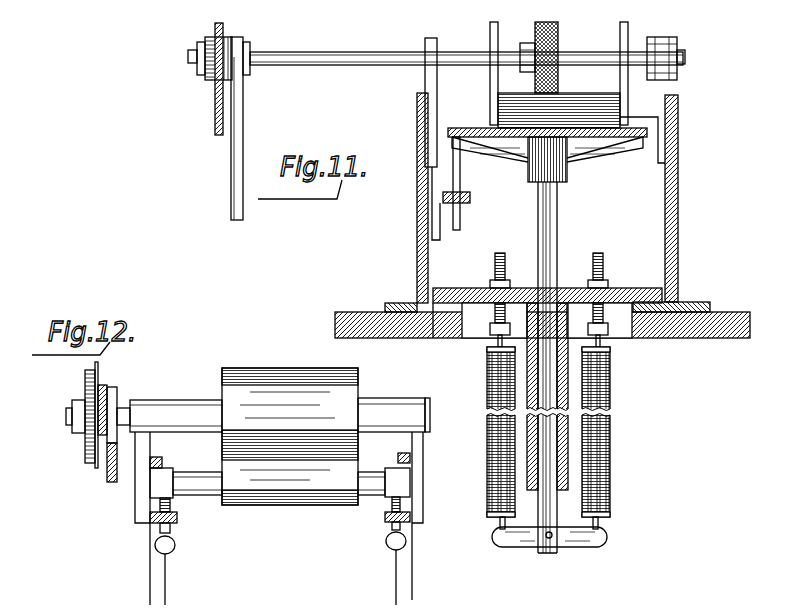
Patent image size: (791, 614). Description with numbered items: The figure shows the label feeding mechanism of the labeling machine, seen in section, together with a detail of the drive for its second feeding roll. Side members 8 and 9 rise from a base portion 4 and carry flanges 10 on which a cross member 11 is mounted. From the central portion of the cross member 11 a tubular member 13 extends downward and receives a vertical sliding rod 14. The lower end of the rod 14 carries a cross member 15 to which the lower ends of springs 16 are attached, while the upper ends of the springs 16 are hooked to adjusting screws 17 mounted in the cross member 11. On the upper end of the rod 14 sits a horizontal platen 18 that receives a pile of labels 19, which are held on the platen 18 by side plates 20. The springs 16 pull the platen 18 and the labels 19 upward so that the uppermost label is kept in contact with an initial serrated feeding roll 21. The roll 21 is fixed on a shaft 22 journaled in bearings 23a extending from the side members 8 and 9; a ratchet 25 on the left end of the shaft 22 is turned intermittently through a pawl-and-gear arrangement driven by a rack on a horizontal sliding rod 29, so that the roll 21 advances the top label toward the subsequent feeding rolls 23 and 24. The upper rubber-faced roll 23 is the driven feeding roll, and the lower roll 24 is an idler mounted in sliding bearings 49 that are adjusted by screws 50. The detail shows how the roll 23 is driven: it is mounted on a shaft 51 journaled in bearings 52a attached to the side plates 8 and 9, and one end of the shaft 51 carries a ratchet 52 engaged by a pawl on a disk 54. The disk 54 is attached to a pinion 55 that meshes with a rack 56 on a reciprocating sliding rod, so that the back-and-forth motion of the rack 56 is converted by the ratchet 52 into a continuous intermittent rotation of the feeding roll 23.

In FIG. 11, the base 4 is at (722, 318).
In FIG. 11, the side member 8 is at (683, 203).
In FIG. 12, the side member 8 is at (150, 570).
In FIG. 11, the side member 9 is at (417, 255).
In FIG. 12, the side member 9 is at (396, 575).
In FIG. 11, the flanges 10 is at (441, 312).
In FIG. 11, the cross member 11 is at (458, 288).
In FIG. 11, the tubular member 13 is at (565, 397).
In FIG. 11, the vertical sliding rod 14 is at (557, 235).
In FIG. 11, the cross member 15 is at (572, 542).
In FIG. 11, the springs 16 is at (598, 457).
In FIG. 11, the adjusting screws 17 is at (600, 262).
In FIG. 11, the horizontal platen 18 is at (600, 140).
In FIG. 11, the pile of labels 19 is at (600, 105).
In FIG. 11, the side plates 20 is at (490, 90).
In FIG. 11, the initial serrated feeding roll 21 is at (558, 33).
In FIG. 11, the shaft 22 is at (380, 58).
In FIG. 12, the feeding roll 23 is at (253, 378).
In FIG. 11, the bearings 23a is at (427, 82).
In FIG. 12, the idler roll 24 is at (283, 495).
In FIG. 11, the ratchet 25 is at (207, 90).
In FIG. 11, the horizontal sliding rod 29 is at (214, 128).
In FIG. 12, the sliding bearings 49 is at (160, 483).
In FIG. 12, the screws 50 is at (176, 546).
In FIG. 12, the shaft 51 is at (72, 420).
In FIG. 12, the ratchet 52 is at (85, 382).
In FIG. 12, the bearings 52a is at (140, 407).
In FIG. 12, the disk 54 is at (96, 468).
In FIG. 12, the pinion 55 is at (100, 473).
In FIG. 12, the rack 56 is at (102, 385).